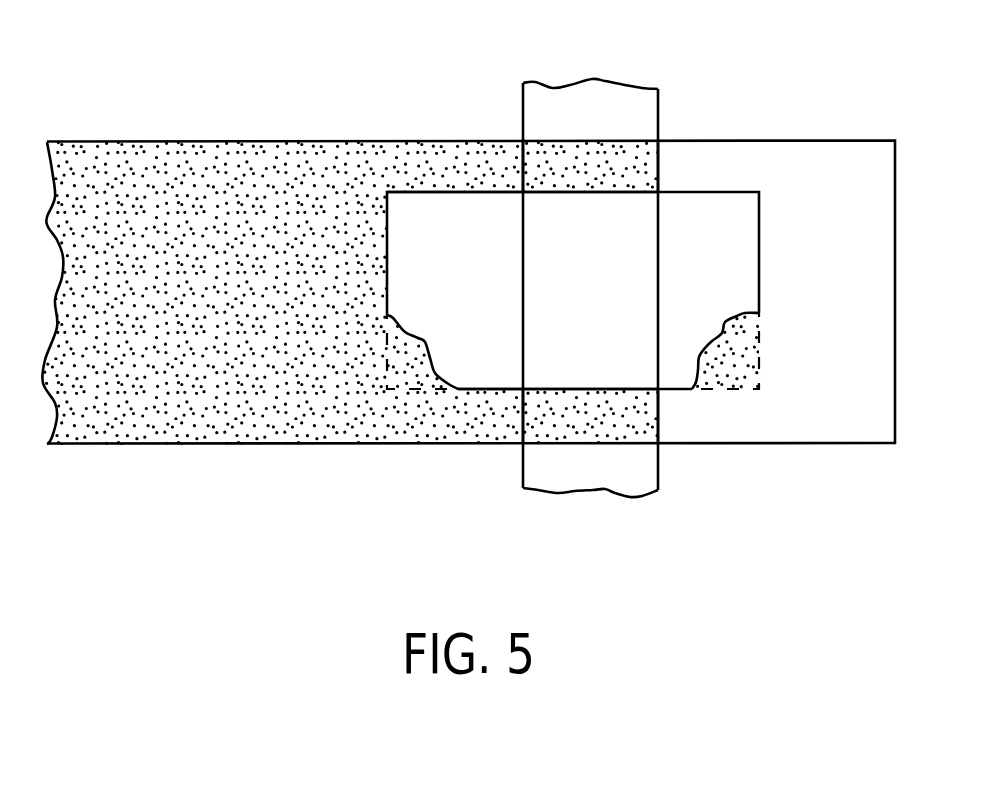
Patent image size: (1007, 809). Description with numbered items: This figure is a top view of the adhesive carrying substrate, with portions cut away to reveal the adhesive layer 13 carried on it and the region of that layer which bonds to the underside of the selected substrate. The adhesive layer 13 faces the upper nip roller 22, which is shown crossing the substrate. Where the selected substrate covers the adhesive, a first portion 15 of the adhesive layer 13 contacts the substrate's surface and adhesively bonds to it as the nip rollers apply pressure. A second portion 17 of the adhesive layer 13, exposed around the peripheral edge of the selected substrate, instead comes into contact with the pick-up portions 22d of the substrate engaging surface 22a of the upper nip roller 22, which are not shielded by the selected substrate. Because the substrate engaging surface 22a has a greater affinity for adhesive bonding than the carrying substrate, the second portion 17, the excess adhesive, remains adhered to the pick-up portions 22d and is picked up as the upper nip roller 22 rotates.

The adhesive layer 13 is at (172, 397).
The first portion of the adhesive layer 15 is at (408, 372).
The second portion of the adhesive layer 17 is at (422, 170).
The upper nip roller 22 is at (575, 108).
The substrate engaging surface 22a is at (637, 258).
The pick-up portions 22d is at (628, 153).